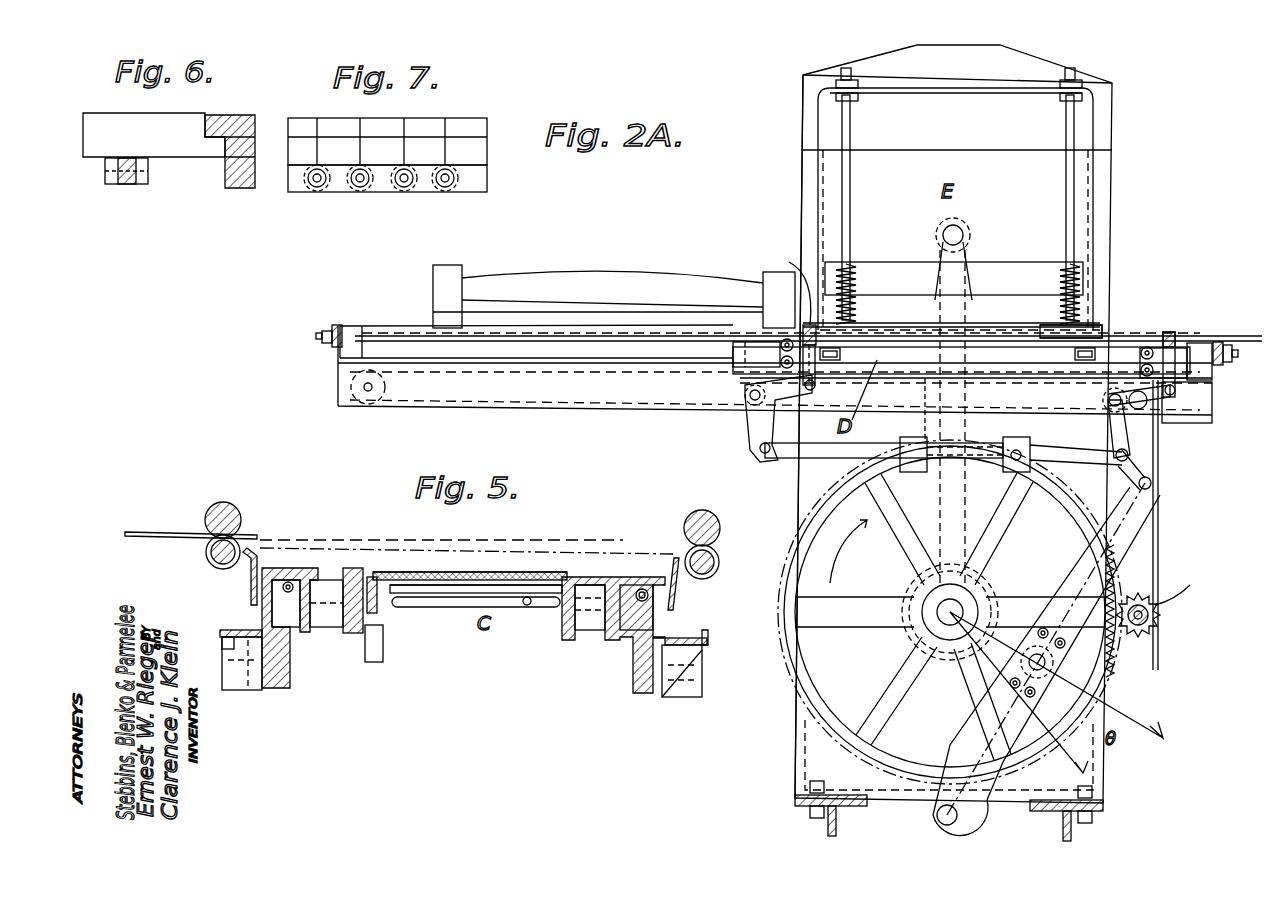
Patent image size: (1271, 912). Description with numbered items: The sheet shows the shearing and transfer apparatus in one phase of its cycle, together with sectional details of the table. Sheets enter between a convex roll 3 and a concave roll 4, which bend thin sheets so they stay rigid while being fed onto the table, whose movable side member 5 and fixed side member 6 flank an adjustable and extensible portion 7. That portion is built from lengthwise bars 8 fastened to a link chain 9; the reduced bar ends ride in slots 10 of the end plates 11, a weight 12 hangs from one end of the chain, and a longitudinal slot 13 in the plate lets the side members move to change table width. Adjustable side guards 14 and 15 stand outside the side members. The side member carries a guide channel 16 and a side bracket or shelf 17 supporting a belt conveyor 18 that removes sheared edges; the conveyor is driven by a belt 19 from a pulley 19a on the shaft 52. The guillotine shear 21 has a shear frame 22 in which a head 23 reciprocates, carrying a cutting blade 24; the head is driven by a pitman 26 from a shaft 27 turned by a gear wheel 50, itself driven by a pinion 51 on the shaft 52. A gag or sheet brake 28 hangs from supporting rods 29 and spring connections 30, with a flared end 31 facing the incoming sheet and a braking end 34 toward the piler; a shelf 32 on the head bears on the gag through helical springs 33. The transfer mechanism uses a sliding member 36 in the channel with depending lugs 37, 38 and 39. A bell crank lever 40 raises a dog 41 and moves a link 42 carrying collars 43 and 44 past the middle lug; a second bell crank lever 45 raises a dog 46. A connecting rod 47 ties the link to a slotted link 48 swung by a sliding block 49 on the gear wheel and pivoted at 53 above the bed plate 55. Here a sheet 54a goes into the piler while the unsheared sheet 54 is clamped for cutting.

In FIG. 5, the convex roll 3 is at (205, 552).
In FIG. 2A, the convex roll 3 is at (490, 305).
In FIG. 5, the concave roll 4 is at (238, 511).
In FIG. 2A, the concave roll 4 is at (488, 278).
In FIG. 5, the movable side member 5 is at (302, 574).
In FIG. 5, the fixed side member 6 is at (612, 582).
In FIG. 2A, the fixed side member 6 is at (380, 326).
In FIG. 5, the adjustable and extensible portion 7 is at (462, 576).
In FIG. 6, the bars 8 is at (115, 124).
In FIG. 7, the bars 8 is at (418, 128).
In FIG. 5, the bars 8 is at (515, 576).
In FIG. 6, the link chain 9 is at (118, 186).
In FIG. 7, the link chain 9 is at (390, 185).
In FIG. 5, the link chain 9 is at (381, 600).
In FIG. 6, the slots 10 is at (236, 108).
In FIG. 6, the end plates 11 is at (233, 190).
In FIG. 5, the end plates 11 is at (447, 607).
In FIG. 2A, the end plates 11 is at (334, 325).
In FIG. 5, the weight 12 is at (383, 643).
In FIG. 5, the longitudinal slot 13 is at (527, 606).
In FIG. 5, the adjustable side guard 14 is at (247, 580).
In FIG. 5, the adjustable side guard 15 is at (675, 590).
In FIG. 2A, the adjustable side guard 15 is at (433, 314).
In FIG. 5, the guide channel 16 is at (340, 612).
In FIG. 5, the side bracket or shelf 17 is at (220, 634).
In FIG. 5, the belt conveyor 18 is at (248, 600).
In FIG. 2A, the belt conveyor 18 is at (436, 410).
In FIG. 2A, the belt 19 is at (1160, 450).
In FIG. 2A, the pulley 19a is at (1188, 584).
In FIG. 2A, the guillotine shear 21 is at (803, 182).
In FIG. 2A, the shear frame 22 is at (1112, 125).
In FIG. 2A, the head 23 is at (940, 159).
In FIG. 2A, the cutting blade 24 is at (1108, 312).
In FIG. 2A, the pitman 26 is at (975, 254).
In FIG. 2A, the shaft 27 is at (920, 626).
In FIG. 2A, the gag or sheet brake 28 is at (896, 325).
In FIG. 2A, the supporting rods 29 is at (850, 170).
In FIG. 2A, the spring connections 30 is at (858, 90).
In FIG. 2A, the flared end of gag 31 is at (800, 262).
In FIG. 2A, the shelf 32 is at (900, 256).
In FIG. 2A, the helical springs 33 is at (860, 279).
In FIG. 2A, the gag end 34 is at (1105, 328).
In FIG. 2A, the sliding member 36 is at (1030, 358).
In FIG. 2A, the depending lug 37 is at (745, 378).
In FIG. 2A, the depending lug 38 is at (1100, 389).
In FIG. 2A, the depending lug 39 is at (930, 397).
In FIG. 2A, the bell crank lever 40 is at (752, 428).
In FIG. 2A, the dog 41 is at (800, 340).
In FIG. 2A, the link 42 is at (840, 460).
In FIG. 2A, the collar 43 is at (912, 472).
In FIG. 2A, the collar 44 is at (1030, 455).
In FIG. 2A, the bell crank lever 45 is at (1165, 430).
In FIG. 2A, the dog 46 is at (1178, 333).
In FIG. 2A, the connecting rod 47 is at (1090, 470).
In FIG. 2A, the slotted link 48 is at (1068, 561).
In FIG. 2A, the sliding block 49 is at (1045, 641).
In FIG. 2A, the gear wheel 50 is at (1120, 664).
In FIG. 2A, the pinion 51 is at (1160, 630).
In FIG. 2A, the shaft 52 is at (1161, 617).
In FIG. 2A, the pivot 53 is at (937, 816).
In FIG. 5, the unsheared sheet 54 is at (158, 532).
In FIG. 2A, the unsheared sheet 54 is at (1000, 336).
In FIG. 2A, the sheet 54a is at (1238, 338).
In FIG. 2A, the bed plate 55 is at (795, 801).